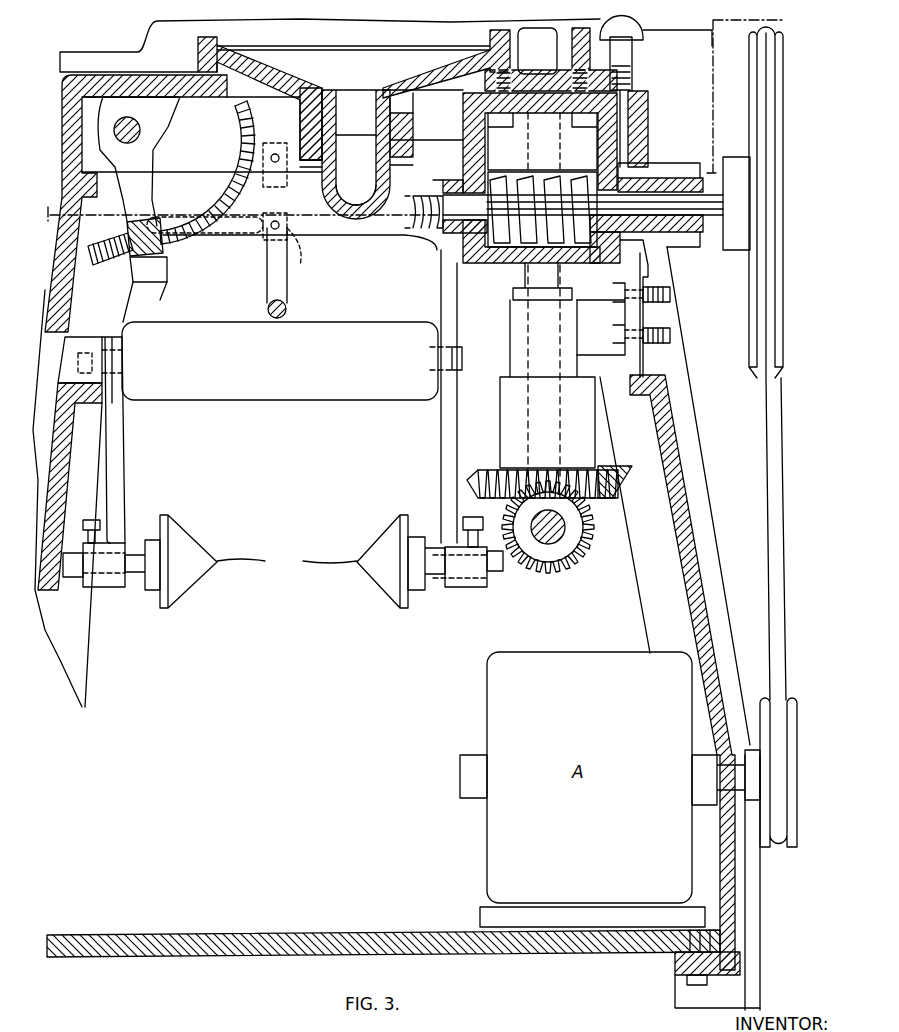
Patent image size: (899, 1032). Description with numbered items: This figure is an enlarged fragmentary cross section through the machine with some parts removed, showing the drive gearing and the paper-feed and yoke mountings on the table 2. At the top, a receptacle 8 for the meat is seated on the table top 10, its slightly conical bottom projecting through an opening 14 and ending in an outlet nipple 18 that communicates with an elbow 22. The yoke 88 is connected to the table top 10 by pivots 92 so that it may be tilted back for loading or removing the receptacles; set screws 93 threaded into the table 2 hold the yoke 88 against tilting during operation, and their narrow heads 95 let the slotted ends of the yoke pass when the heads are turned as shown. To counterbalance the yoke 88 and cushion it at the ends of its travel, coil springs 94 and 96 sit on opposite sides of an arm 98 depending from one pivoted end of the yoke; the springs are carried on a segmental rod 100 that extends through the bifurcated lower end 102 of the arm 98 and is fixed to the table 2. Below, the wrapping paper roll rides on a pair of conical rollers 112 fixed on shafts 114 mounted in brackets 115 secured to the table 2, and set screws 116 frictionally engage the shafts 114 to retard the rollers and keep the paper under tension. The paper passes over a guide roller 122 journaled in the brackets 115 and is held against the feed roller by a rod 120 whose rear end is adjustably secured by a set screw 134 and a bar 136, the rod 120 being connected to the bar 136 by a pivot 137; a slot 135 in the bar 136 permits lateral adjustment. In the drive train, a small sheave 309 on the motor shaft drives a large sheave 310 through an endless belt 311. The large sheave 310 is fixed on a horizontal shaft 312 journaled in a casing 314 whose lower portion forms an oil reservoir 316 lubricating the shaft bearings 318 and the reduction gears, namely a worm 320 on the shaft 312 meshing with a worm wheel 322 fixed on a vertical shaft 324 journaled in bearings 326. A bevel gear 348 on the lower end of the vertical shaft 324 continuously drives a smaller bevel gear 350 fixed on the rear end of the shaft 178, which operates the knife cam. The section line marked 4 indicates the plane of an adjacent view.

The table 2 is at (78, 675).
The section line 4- 4 is at (407, 117).
The receptacle 8 is at (354, 95).
The table top 10 is at (62, 99).
The opening 14 is at (463, 87).
The outlet nipple 18 is at (356, 154).
The elbow 22 is at (356, 189).
The yoke 88 is at (138, 47).
The pivots 92 is at (114, 131).
The set screws 93 is at (632, 81).
The coil spring 94 is at (104, 264).
The narrow heads 95 is at (640, 30).
The coil spring 96 is at (185, 242).
The arm 98 is at (140, 195).
The segmental rod 100 is at (152, 263).
The bifurcated lower end 102 is at (150, 278).
The conical rollers 112 is at (284, 561).
The shafts 114 is at (135, 568).
The brackets 115 is at (117, 467).
The set screws 116 is at (90, 520).
The rod 120 is at (288, 308).
The guide roller 122 is at (280, 361).
The set screw 134 is at (276, 154).
The slot 135 is at (235, 235).
The bar 136 is at (300, 234).
The pivot 137 is at (291, 252).
The shaft 178 is at (548, 545).
The small sheave 309 is at (790, 852).
The large sheave 310 is at (750, 325).
The endless belt 311 is at (768, 478).
The horizontal shaft 312 is at (712, 205).
The casing 314 is at (608, 143).
The oil reservoir 316 is at (493, 243).
The shaft bearings 318 is at (665, 180).
The worm 320 is at (627, 272).
The worm wheel 322 is at (418, 223).
The vertical shaft 324 is at (551, 59).
The bearings 326 is at (497, 331).
The bevel gear 348 is at (470, 474).
The small bevel gear 350 is at (578, 548).